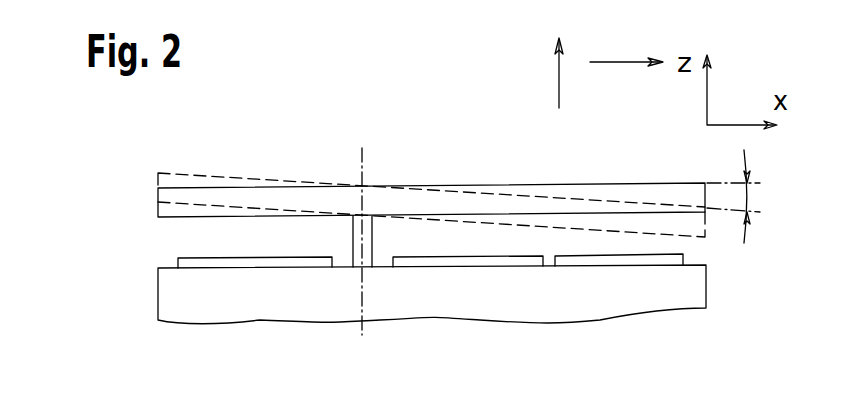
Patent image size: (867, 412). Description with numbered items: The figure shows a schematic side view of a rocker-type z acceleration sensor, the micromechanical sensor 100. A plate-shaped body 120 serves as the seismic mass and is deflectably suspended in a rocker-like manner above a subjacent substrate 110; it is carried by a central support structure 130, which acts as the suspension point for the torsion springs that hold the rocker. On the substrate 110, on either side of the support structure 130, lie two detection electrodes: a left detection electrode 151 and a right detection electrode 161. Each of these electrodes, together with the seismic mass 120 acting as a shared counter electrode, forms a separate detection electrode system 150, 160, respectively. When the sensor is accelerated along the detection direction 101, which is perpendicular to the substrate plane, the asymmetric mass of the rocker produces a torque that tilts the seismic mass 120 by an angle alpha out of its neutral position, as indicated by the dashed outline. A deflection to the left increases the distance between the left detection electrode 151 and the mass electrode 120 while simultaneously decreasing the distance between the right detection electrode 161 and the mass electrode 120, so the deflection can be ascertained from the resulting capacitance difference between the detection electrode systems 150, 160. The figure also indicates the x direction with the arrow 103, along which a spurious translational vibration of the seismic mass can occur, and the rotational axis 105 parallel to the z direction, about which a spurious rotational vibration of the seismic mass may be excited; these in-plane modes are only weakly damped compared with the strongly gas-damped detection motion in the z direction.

The micromechanical sensor 100 is at (441, 255).
The detection direction 101 is at (558, 74).
The arrow 103 is at (627, 63).
The rotational axis 105 is at (363, 152).
The substrate 110 is at (158, 295).
The plate-shaped body 120 is at (158, 200).
The central support structure 130 is at (357, 270).
The detection electrode system 150 is at (204, 314).
The left detection electrode 151 is at (254, 263).
The detection electrode system 160 is at (538, 312).
The right detection electrode 161 is at (468, 262).